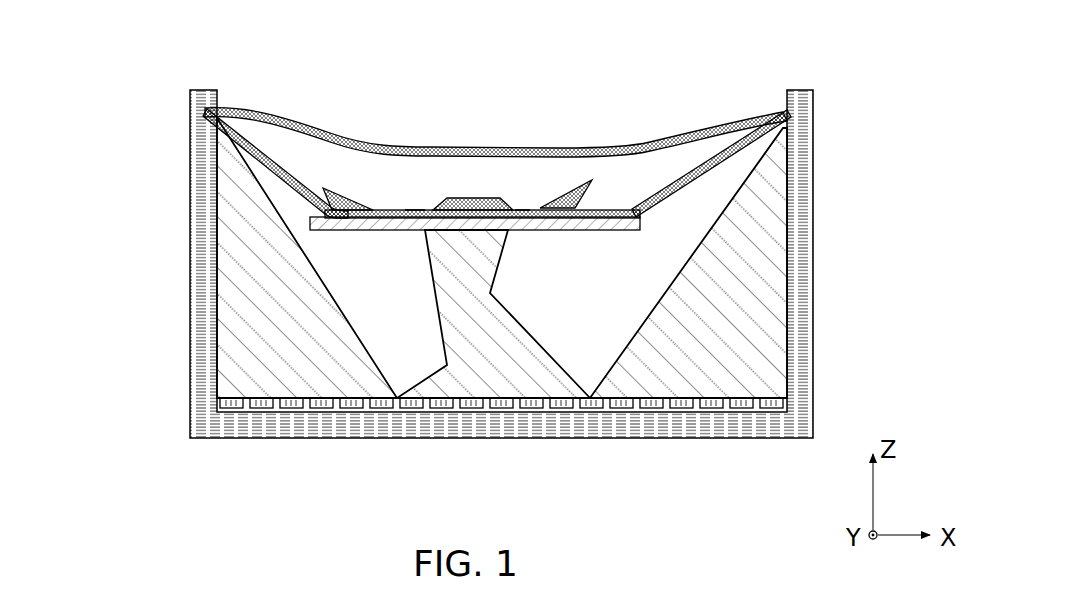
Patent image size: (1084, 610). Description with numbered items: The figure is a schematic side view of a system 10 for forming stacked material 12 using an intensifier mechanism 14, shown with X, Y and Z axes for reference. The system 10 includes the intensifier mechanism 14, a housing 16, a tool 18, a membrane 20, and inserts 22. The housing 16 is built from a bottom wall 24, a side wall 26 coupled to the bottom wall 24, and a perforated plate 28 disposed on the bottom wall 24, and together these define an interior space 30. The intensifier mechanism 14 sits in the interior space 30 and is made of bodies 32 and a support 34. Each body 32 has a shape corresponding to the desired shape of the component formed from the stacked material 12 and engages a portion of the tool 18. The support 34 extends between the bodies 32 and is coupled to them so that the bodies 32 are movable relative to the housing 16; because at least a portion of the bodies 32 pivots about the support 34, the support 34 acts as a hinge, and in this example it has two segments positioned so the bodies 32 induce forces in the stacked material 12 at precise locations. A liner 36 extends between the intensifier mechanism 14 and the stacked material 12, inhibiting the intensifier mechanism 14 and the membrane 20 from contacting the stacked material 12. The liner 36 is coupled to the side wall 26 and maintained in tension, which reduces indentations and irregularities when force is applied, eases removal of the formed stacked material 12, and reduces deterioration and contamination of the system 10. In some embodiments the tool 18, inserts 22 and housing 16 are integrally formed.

The system 10 is at (148, 88).
The stacked material 12 is at (608, 214).
The intensifier mechanism 14 is at (390, 192).
The housing 16 is at (826, 140).
The tool 18 is at (518, 375).
The membrane 20 is at (268, 107).
The inserts 22 is at (246, 348).
The bottom wall 24 is at (287, 437).
The side wall 26 is at (200, 372).
The perforated plate 28 is at (378, 397).
The interior space 30 is at (642, 180).
The bodies 32 is at (335, 190).
The support 34 is at (413, 210).
The liner 36 is at (216, 178).